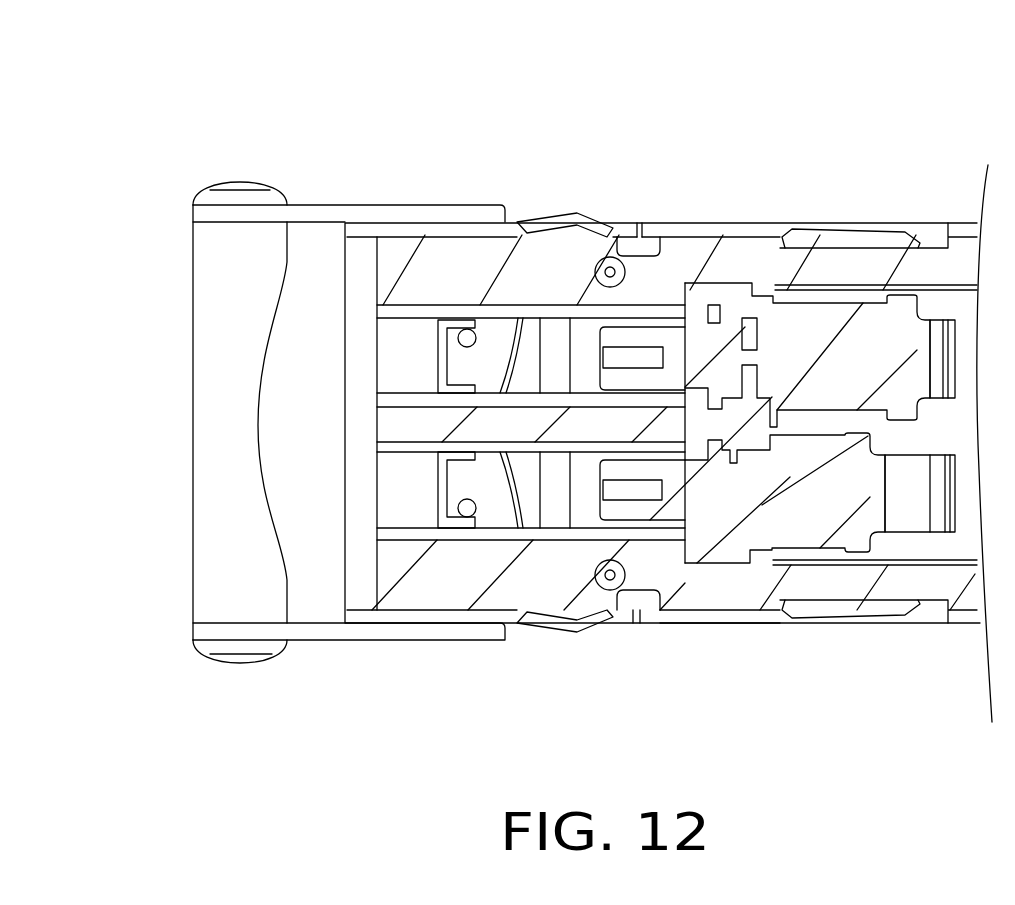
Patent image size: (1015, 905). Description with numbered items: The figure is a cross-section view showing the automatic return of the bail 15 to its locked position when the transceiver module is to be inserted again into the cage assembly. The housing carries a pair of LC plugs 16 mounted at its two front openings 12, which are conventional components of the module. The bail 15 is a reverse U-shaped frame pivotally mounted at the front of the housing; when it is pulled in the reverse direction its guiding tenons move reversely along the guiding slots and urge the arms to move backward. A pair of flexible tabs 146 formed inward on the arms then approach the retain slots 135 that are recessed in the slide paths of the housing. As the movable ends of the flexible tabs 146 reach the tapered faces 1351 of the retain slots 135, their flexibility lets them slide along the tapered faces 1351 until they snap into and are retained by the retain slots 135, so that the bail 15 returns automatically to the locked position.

The front opening 12 is at (408, 354).
The bail 15 is at (225, 273).
The LC plug 16 is at (658, 335).
The retain slot 135 is at (645, 597).
The tapered face 1351 is at (641, 594).
The flexible tab 146 is at (590, 622).